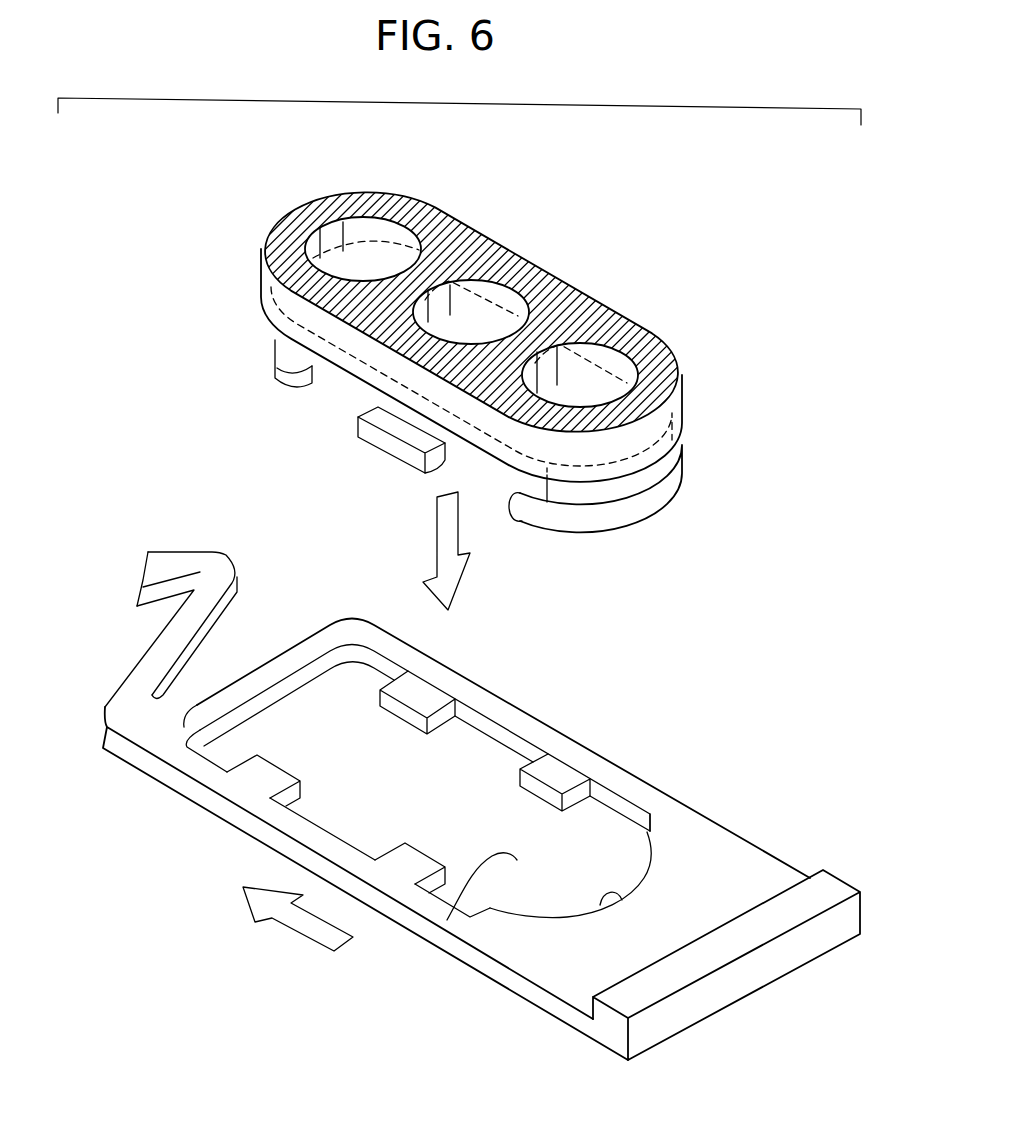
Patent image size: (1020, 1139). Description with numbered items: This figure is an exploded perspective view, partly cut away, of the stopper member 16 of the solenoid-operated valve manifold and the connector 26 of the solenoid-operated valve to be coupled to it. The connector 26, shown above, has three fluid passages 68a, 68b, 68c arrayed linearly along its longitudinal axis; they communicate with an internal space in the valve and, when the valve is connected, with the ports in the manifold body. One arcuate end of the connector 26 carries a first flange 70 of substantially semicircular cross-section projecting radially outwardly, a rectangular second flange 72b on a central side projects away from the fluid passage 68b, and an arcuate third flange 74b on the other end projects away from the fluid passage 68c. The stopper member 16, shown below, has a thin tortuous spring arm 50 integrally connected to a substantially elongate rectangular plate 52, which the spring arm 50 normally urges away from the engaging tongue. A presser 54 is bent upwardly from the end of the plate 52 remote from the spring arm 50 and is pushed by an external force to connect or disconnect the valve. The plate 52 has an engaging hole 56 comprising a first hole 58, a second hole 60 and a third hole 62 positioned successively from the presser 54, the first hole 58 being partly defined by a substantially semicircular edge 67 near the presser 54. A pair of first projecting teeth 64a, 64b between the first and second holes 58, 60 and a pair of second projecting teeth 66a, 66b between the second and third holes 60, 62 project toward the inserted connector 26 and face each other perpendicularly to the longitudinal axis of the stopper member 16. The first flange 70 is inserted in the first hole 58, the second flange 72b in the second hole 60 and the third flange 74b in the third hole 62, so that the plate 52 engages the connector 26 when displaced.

The stopper member 16 is at (746, 828).
The connector 26 is at (677, 403).
The spring arm 50 is at (212, 570).
The plate 52 is at (316, 843).
The presser 54 is at (670, 1020).
The engaging hole 56 is at (599, 821).
The first hole 58 is at (447, 920).
The second hole 60 is at (463, 757).
The third hole 62 is at (323, 690).
The first projecting tooth 64a is at (541, 778).
The first projecting tooth 64b is at (399, 858).
The second projecting tooth 66a is at (410, 696).
The second projecting tooth 66b is at (262, 777).
The semicircular edge 67 is at (615, 895).
The fluid passage 68a is at (596, 360).
The fluid passage 68b is at (490, 302).
The fluid passage 68c is at (366, 254).
The first flange 70 is at (657, 500).
The second flange 72b is at (371, 438).
The third flange 74b is at (284, 378).